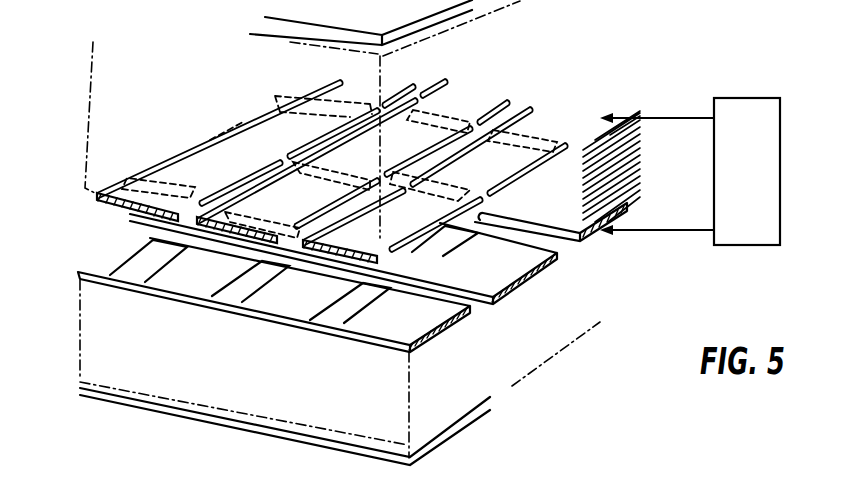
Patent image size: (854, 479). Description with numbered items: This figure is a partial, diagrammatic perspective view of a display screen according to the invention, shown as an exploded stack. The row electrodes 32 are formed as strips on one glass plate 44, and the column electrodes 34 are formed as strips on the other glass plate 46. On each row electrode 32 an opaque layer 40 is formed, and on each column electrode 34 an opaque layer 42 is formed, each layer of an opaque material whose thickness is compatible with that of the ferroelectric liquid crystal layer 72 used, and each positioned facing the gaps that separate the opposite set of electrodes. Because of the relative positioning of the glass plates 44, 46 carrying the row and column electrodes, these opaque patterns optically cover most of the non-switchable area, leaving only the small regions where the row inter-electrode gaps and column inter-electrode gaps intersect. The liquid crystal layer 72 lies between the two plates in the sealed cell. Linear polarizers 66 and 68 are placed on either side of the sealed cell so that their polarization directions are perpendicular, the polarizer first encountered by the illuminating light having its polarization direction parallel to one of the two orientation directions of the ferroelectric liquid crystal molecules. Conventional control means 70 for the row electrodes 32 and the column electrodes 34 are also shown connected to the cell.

The row electrode 32 is at (550, 262).
The column electrode 34 is at (345, 100).
The opaque layer 40 is at (360, 317).
The opaque layer 42 is at (243, 135).
The glass plate 44 is at (440, 395).
The glass plate 46 is at (90, 122).
The linear polarizer 66 is at (150, 407).
The linear polarizer 68 is at (433, 20).
The control means 70 is at (732, 229).
The liquid crystal layer 72 is at (612, 174).